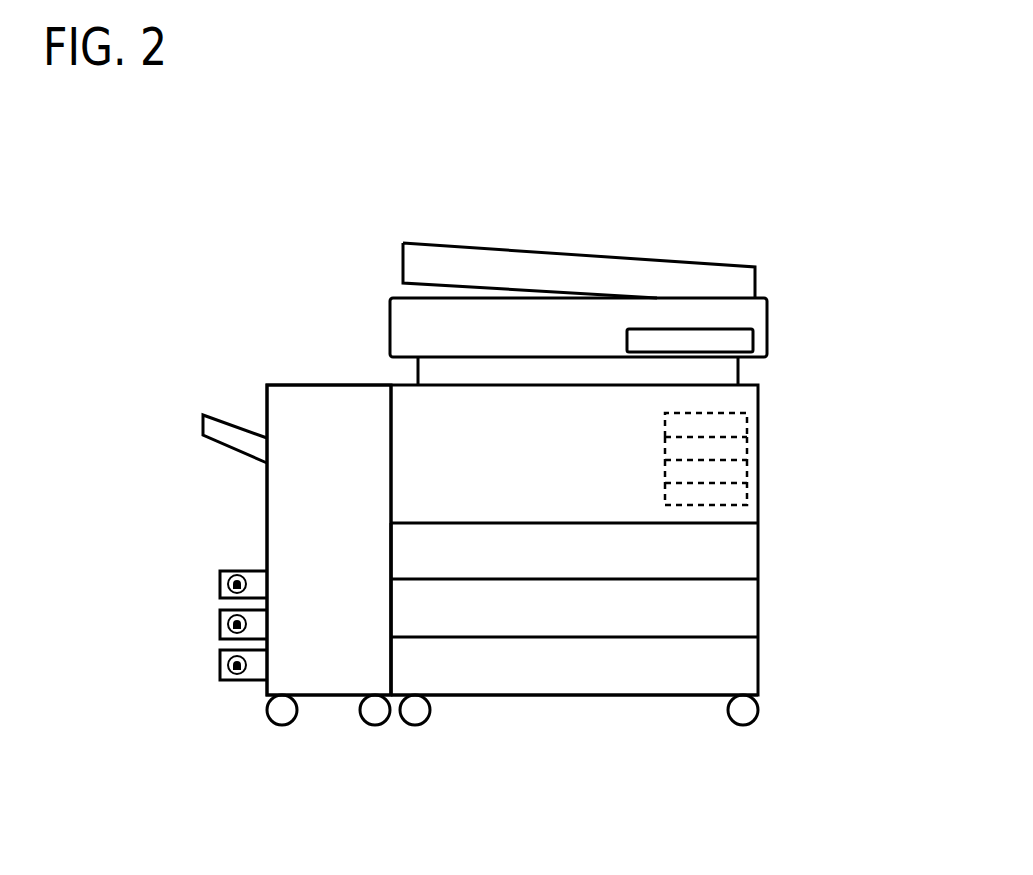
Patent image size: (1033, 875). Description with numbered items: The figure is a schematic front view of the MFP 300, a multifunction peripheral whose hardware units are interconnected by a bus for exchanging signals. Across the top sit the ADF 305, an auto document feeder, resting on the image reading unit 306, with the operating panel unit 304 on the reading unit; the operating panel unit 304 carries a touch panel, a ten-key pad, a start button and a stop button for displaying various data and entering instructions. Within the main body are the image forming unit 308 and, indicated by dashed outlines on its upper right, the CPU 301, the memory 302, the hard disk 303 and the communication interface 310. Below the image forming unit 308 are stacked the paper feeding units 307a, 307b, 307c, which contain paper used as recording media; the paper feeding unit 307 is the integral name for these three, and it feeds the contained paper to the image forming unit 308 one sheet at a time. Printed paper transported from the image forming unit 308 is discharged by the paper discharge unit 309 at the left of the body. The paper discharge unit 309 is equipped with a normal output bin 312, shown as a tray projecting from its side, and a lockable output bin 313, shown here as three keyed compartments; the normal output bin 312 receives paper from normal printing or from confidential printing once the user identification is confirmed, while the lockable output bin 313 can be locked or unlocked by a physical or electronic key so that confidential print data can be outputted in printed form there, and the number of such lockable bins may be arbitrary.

The MFP 300 is at (220, 186).
The CPU 301 is at (753, 422).
The memory 302 is at (755, 448).
The hard disk 303 is at (750, 472).
The operating panel unit 304 is at (755, 342).
The ADF 305 is at (653, 258).
The image reading unit 306 is at (390, 313).
The paper feeding unit 307 is at (515, 698).
The paper feeding unit 307a is at (527, 572).
The paper feeding unit 307b is at (527, 629).
The paper feeding unit 307c is at (527, 686).
The image forming unit 308 is at (528, 500).
The paper discharge unit 309 is at (305, 550).
The communication interface 310 is at (755, 502).
The normal output bin 312 is at (203, 423).
The lockable output bin 313 is at (220, 660).